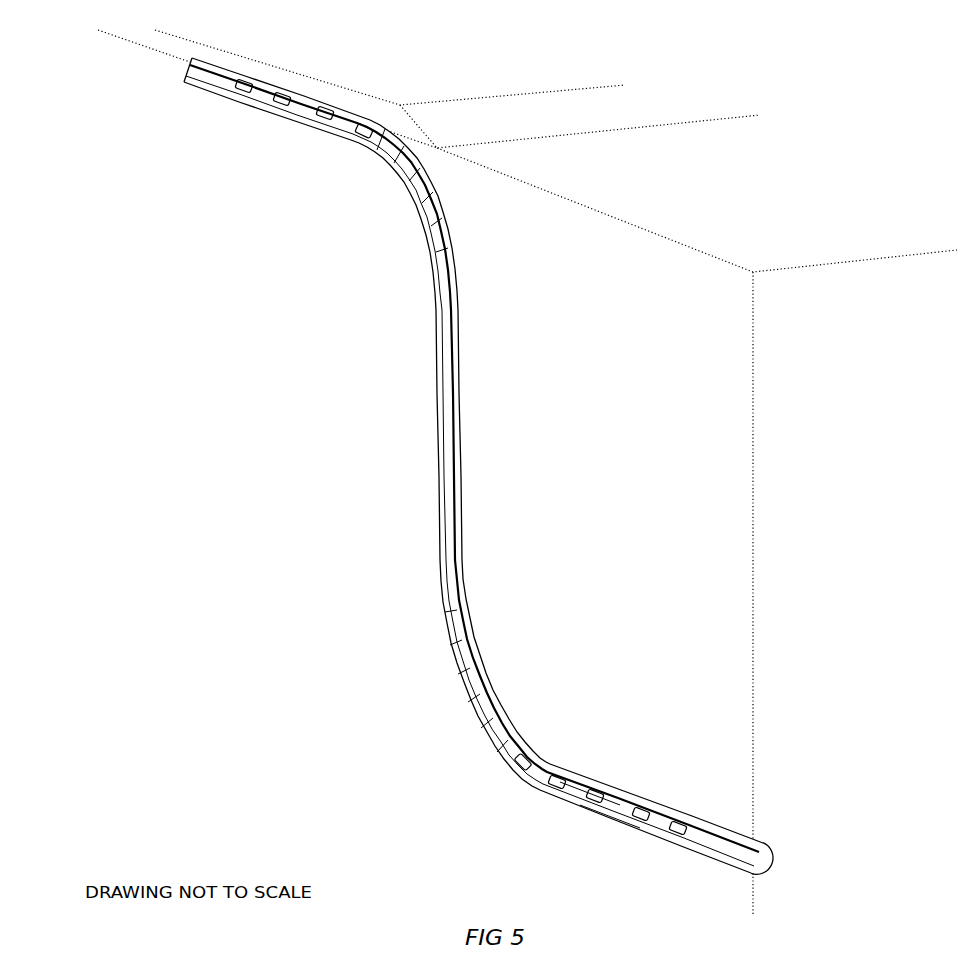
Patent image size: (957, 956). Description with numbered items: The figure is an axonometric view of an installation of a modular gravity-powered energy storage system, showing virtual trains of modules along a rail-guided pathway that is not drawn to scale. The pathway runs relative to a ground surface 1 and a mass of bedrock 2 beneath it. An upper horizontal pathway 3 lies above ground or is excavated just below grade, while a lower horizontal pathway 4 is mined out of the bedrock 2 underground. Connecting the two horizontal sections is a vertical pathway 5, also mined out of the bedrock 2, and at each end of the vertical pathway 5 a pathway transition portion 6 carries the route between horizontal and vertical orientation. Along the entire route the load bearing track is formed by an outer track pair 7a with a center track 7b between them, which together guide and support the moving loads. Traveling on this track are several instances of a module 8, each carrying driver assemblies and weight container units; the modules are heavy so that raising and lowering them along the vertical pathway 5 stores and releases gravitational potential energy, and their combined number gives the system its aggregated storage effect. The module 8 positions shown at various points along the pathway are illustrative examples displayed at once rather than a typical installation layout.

The ground surface 1 is at (677, 205).
The bedrock 2 is at (655, 540).
The horizontal pathway, above ground, or excavated just below grade 3 is at (192, 52).
The horizontal pathway, mined out of bedrock 4 is at (729, 831).
The vertical pathway, mined out of bedrock 5 is at (437, 497).
The pathway transition portion between horizontal and vertical 6 is at (437, 216).
The load bearing track—outer track pair 7a is at (600, 821).
The load bearing track—center track 7b is at (588, 782).
The module with driver assemblies and weight container units 8 is at (254, 80).